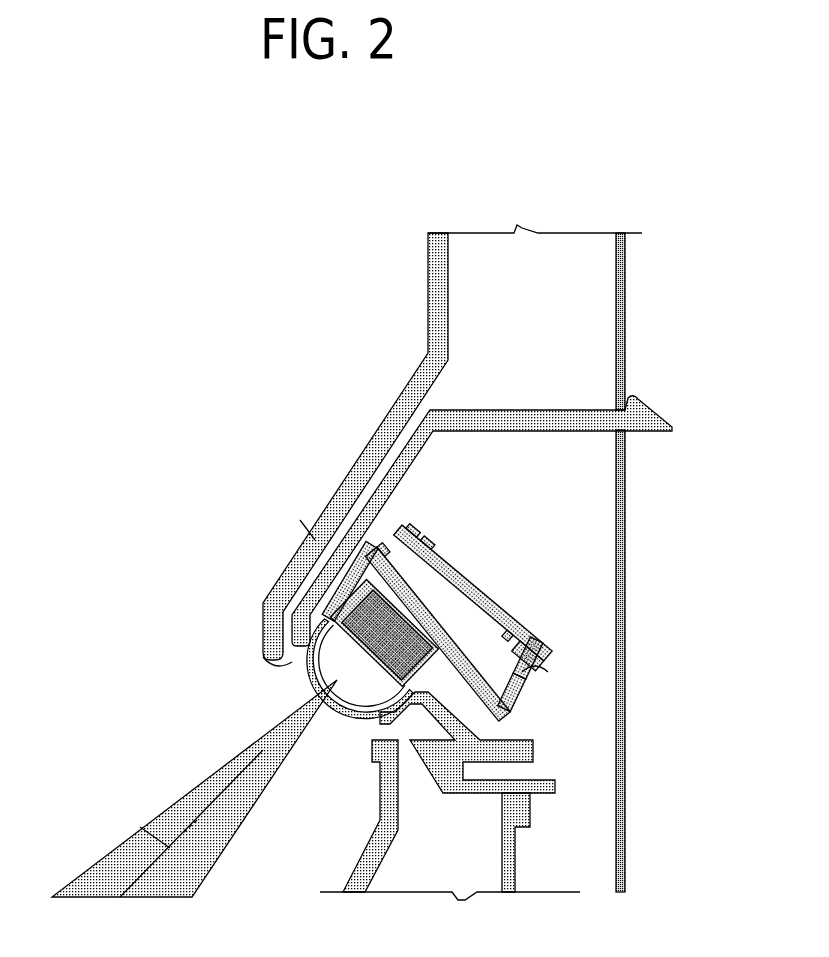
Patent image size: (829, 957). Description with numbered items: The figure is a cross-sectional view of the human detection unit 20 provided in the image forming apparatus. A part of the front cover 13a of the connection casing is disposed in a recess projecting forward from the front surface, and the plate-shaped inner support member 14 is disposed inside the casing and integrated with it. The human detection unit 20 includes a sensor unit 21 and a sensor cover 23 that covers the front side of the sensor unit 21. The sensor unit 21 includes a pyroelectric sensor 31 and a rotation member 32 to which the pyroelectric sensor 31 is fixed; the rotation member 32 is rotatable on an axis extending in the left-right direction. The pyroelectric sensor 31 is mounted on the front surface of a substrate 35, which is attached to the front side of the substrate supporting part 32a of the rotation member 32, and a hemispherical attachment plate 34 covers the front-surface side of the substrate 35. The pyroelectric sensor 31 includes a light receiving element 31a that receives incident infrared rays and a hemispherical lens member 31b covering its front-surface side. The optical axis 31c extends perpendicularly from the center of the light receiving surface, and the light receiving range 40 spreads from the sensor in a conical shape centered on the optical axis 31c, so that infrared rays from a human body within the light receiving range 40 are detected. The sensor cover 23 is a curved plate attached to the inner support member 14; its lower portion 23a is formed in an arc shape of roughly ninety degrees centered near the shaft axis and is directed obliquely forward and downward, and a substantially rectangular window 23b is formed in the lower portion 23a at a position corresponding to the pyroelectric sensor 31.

The front cover 13a is at (428, 280).
The inner support member 14 is at (625, 533).
The human detection unit 20 is at (296, 514).
The sensor unit 21 is at (450, 542).
The sensor cover 23 is at (310, 593).
The lower portion 23a is at (312, 694).
The window 23b is at (292, 665).
The pyroelectric sensor 31 is at (413, 627).
The light receiving element 31a is at (410, 630).
The hemispherical lens member 31b is at (367, 657).
The optical axis 31c is at (132, 824).
The rotation member 32 is at (530, 642).
The substrate supporting part 32a is at (527, 700).
The attachment plate 34 is at (340, 715).
The substrate 35 is at (522, 680).
The light receiving range 40 is at (95, 862).